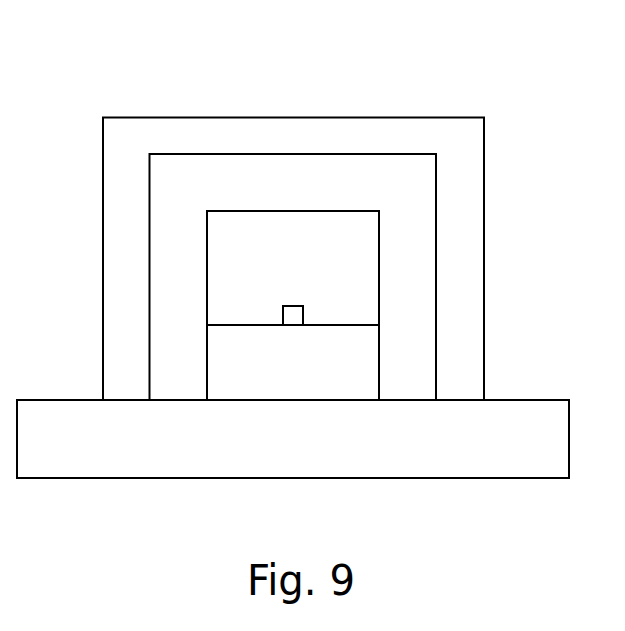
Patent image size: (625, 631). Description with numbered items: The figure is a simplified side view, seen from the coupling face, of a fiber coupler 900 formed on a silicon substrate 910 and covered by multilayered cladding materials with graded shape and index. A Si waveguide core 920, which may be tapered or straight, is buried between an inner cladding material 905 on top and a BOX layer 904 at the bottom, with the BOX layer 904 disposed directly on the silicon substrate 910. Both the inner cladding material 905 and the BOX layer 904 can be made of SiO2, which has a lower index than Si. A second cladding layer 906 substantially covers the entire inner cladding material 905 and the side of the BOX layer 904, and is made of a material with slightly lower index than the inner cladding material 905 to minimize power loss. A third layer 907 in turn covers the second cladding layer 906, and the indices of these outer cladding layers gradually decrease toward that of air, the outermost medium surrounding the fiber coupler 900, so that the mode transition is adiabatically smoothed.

The fiber coupler 900 is at (112, 53).
The BOX layer 904 is at (348, 360).
The inner cladding material 905 is at (350, 268).
The second cladding layer 906 is at (402, 221).
The third layer 907 is at (453, 168).
The silicon substrate 910 is at (293, 439).
The Si waveguide core 920 is at (302, 318).